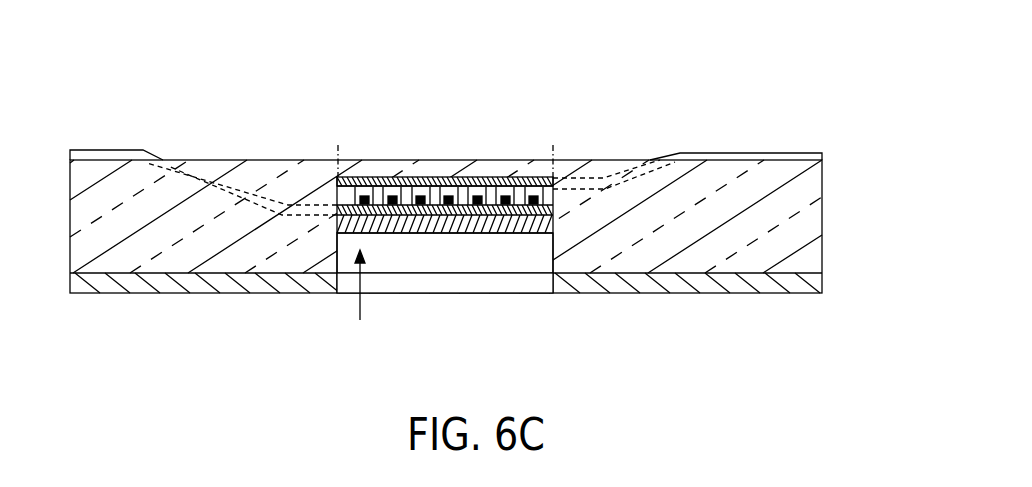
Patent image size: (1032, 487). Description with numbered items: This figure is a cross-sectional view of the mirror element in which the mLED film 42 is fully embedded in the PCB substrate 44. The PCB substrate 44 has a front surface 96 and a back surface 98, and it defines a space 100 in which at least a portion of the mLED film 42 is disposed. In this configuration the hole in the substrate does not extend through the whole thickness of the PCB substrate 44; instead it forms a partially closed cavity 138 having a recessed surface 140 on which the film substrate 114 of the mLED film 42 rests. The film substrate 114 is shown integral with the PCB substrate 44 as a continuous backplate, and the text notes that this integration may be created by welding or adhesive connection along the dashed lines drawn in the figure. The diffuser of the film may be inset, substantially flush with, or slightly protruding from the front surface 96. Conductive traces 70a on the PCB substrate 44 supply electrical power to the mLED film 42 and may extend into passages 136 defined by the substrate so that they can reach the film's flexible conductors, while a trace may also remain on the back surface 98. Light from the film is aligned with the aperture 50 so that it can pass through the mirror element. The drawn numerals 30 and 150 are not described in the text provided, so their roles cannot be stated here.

The substrate 30 is at (212, 283).
The mLED film 42 is at (357, 301).
The PCB substrate 44 is at (813, 255).
The aperture 50 is at (417, 285).
The conductive traces 70a is at (130, 150).
The front surface 96 is at (287, 275).
The back surface 98 is at (778, 162).
The space 100 is at (465, 268).
The film substrate 114 is at (437, 177).
The passages 136 is at (197, 182).
The partially closed cavity 138 is at (552, 238).
The recessed surface 140 is at (353, 165).
The upper surface layer 150 is at (710, 152).